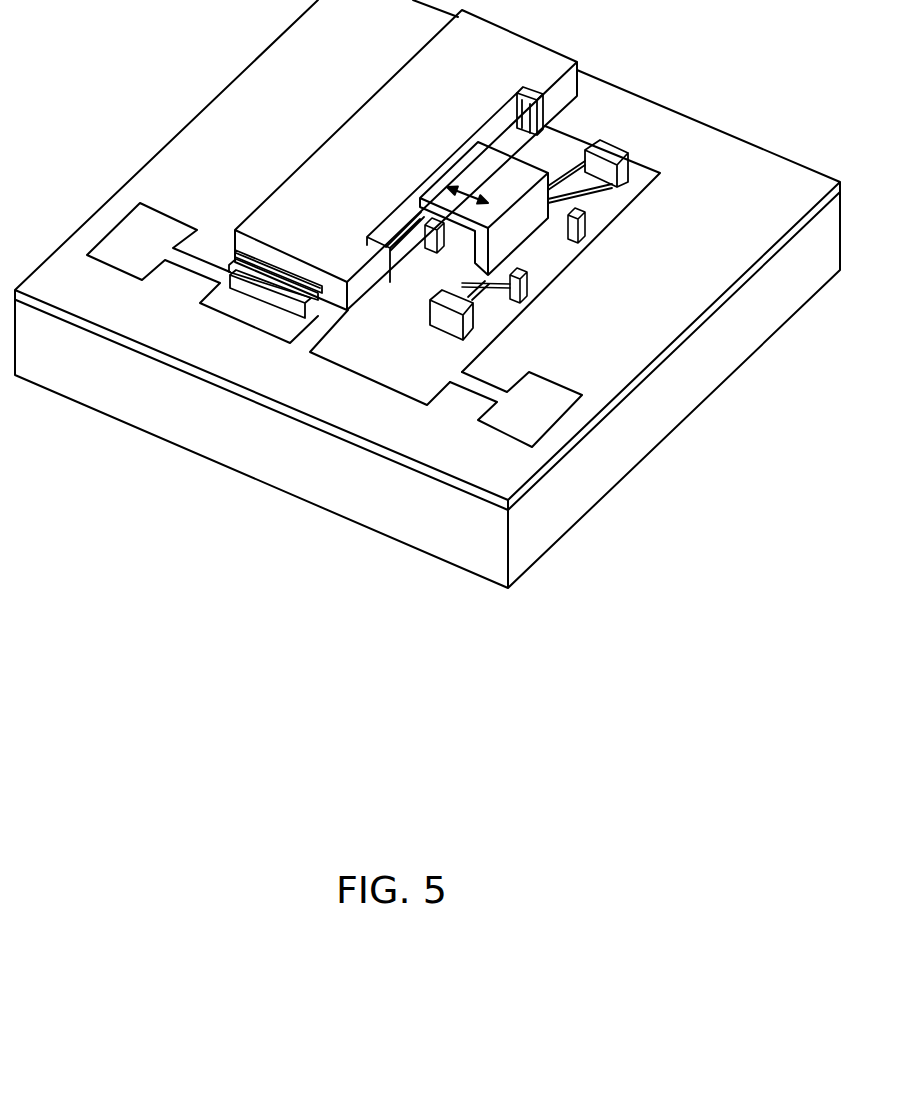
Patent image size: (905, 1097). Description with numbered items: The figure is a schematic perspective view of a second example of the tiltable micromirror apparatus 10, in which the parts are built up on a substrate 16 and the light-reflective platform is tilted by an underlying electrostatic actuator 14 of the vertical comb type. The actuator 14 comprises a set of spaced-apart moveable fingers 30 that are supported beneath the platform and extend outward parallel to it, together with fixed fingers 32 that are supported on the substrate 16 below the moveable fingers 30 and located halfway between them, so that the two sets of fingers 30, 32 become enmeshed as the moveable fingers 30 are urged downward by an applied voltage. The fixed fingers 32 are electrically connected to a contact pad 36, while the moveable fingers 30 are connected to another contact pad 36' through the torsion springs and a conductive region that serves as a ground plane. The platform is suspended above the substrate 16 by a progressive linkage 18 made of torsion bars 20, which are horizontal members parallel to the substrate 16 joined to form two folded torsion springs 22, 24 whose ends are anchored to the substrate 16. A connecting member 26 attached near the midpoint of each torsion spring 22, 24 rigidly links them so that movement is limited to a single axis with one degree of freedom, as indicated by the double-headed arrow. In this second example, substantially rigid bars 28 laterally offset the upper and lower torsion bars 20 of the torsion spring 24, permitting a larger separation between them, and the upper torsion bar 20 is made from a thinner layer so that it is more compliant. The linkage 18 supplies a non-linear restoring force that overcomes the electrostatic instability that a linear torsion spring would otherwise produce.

The tiltable micromirror apparatus 10 is at (611, 597).
The electrostatic actuator 14 is at (228, 253).
The substrate 16 is at (491, 544).
The progressive linkage 18 is at (582, 131).
The torsion bars 20 is at (522, 136).
The torsion spring 22 is at (405, 270).
The torsion spring 24 is at (442, 338).
The connecting member 26 is at (504, 182).
The substantially rigid bars 28 is at (433, 332).
The moveable fingers 30 is at (273, 275).
The fixed fingers 32 is at (287, 311).
The contact pad 36 is at (202, 273).
The contact pad 36' is at (516, 409).